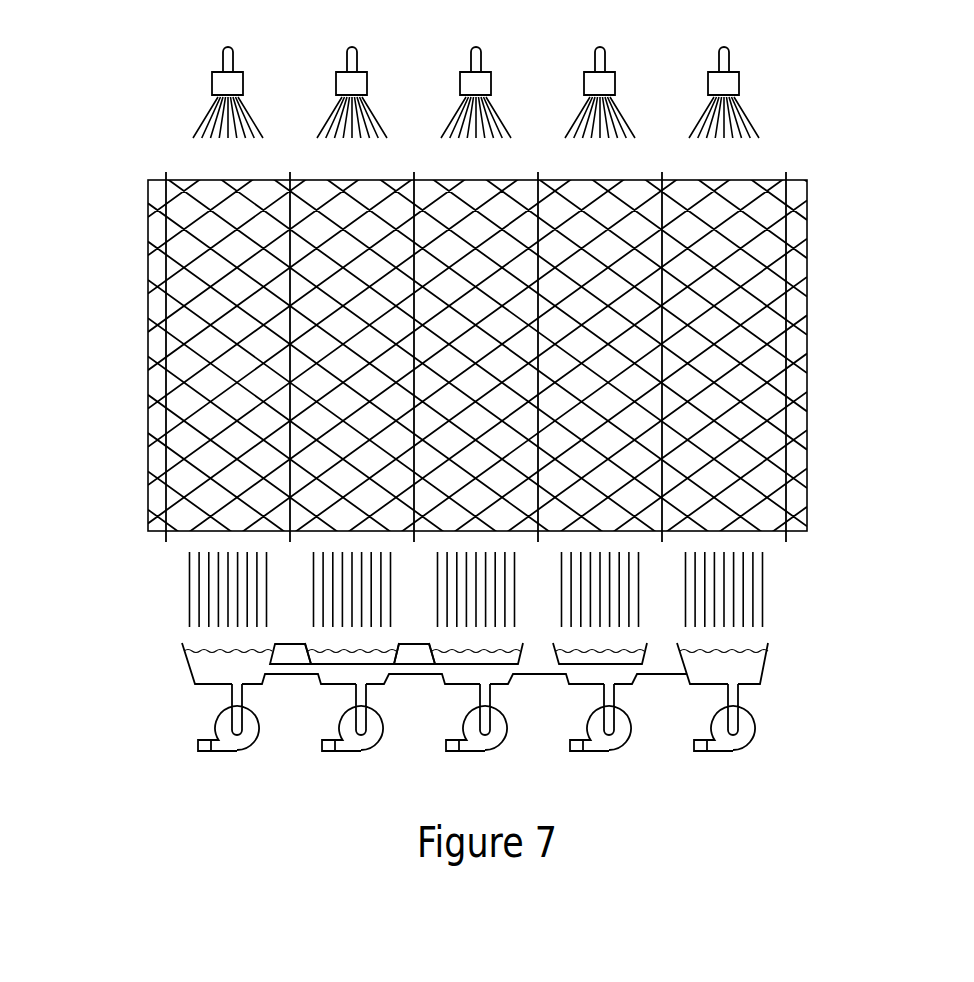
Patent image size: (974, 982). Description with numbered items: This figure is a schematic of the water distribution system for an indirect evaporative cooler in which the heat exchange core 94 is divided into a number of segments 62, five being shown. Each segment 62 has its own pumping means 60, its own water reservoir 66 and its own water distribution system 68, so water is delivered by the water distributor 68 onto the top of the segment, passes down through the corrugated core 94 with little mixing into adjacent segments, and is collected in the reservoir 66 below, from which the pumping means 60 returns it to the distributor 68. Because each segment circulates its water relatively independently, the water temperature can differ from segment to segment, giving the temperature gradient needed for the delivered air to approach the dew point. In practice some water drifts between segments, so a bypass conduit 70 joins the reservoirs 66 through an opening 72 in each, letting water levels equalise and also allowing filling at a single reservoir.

The pumping means 60 is at (223, 725).
The segment 62 is at (477, 164).
The water reservoir 66 is at (230, 667).
The water distribution system 68 is at (225, 83).
The bypass conduit 70 is at (420, 665).
The opening 72 is at (685, 670).
The core 94 is at (853, 193).